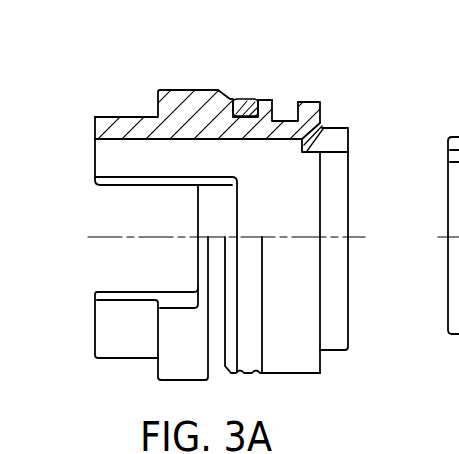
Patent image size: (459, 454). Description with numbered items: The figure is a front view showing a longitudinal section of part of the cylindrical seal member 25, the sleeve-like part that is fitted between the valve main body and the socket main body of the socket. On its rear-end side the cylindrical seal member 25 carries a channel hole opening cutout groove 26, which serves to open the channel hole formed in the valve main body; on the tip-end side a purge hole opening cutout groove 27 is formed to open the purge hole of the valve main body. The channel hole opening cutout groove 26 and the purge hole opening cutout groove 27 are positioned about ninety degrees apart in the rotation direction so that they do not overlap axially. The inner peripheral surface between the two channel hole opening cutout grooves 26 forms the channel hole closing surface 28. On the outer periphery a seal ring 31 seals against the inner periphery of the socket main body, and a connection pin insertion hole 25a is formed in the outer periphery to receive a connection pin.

The cylindrical seal member 25 is at (212, 78).
The connection pin insertion hole 25a is at (285, 110).
The seal ring 31 is at (250, 99).
The purge hole opening cutout groove 27 is at (345, 125).
The channel hole closing surface 28 is at (121, 140).
The channel hole opening cutout groove 26 is at (113, 273).